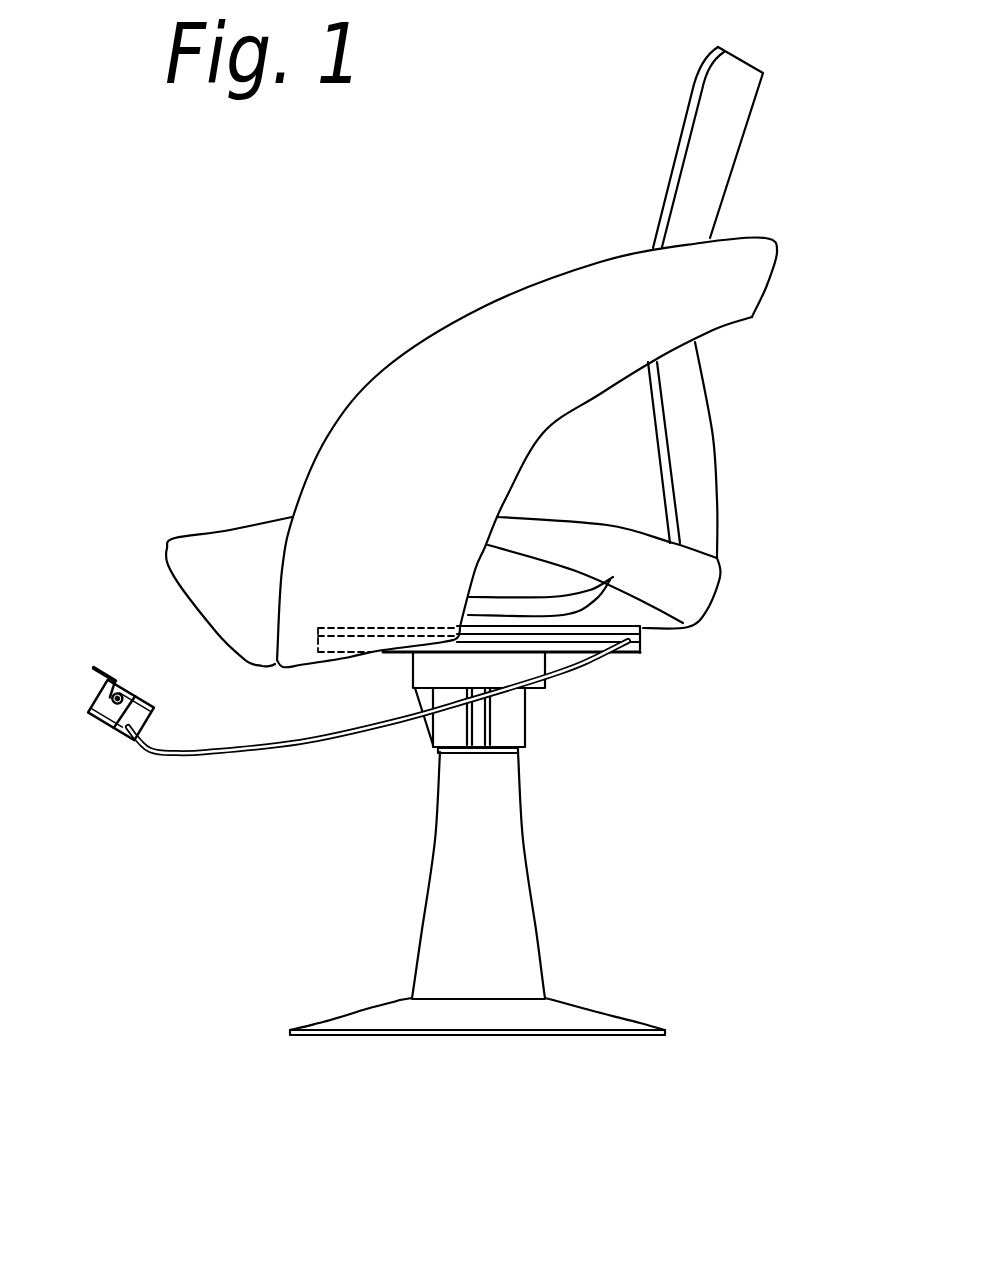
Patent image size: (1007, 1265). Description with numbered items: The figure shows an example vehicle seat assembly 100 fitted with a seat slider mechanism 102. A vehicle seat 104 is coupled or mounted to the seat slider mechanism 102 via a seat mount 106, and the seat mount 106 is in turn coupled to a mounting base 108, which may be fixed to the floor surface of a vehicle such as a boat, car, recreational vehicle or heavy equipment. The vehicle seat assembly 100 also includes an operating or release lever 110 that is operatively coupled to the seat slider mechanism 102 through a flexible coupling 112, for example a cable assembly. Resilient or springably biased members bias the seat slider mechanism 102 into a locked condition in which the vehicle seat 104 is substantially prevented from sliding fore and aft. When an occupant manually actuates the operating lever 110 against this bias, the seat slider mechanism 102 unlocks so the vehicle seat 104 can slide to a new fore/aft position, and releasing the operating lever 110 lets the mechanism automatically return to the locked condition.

The vehicle seat assembly 100 is at (276, 255).
The seat slider mechanism 102 is at (642, 643).
The vehicle seat 104 is at (727, 108).
The seat mount 106 is at (525, 703).
The mounting base 108 is at (605, 1035).
The operating lever 110 is at (100, 745).
The flexible coupling 112 is at (322, 743).